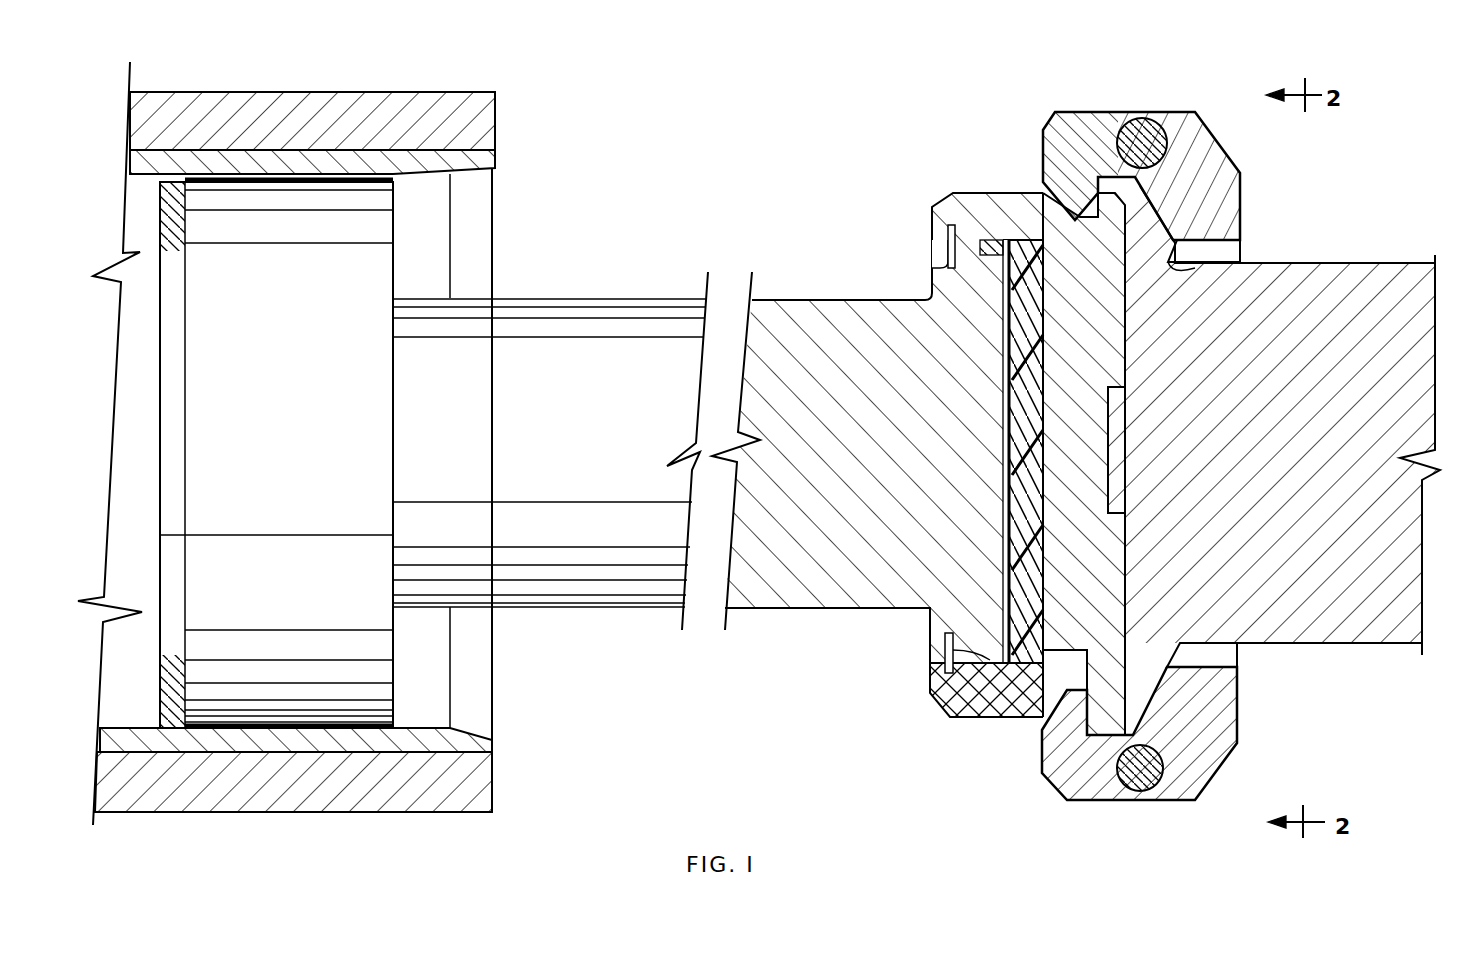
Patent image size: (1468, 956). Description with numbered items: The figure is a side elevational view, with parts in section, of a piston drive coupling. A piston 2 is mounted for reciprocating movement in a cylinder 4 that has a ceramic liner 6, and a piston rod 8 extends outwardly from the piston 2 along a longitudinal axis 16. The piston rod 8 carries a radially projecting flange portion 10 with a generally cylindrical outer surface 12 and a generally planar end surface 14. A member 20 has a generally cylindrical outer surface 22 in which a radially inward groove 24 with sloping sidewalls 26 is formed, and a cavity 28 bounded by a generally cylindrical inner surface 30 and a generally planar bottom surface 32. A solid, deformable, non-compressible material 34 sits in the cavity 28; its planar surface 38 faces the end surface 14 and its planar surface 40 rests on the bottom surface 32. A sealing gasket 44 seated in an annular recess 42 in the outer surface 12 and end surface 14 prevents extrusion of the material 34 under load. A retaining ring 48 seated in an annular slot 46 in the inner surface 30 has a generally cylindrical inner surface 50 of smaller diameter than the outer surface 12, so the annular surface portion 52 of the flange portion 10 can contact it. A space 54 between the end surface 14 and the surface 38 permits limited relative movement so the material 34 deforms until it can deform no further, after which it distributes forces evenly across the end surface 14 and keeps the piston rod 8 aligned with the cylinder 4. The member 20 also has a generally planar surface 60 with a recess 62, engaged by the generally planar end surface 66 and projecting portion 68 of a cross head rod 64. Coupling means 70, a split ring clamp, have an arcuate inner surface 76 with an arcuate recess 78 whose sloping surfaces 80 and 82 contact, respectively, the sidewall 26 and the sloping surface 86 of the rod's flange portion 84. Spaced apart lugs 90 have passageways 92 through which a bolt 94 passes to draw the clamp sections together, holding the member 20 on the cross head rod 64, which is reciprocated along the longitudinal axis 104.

The piston 2 is at (276, 443).
The cylinder 4 is at (297, 92).
The ceramic liner 6 is at (368, 160).
The piston rod 8 is at (552, 403).
The flange portion 10 is at (935, 600).
The generally cylindrical outer surface 12 is at (968, 240).
The generally planar end surface 14 is at (1003, 410).
The longitudinal axis 16 is at (468, 455).
The member 20 is at (1090, 280).
The generally cylindrical outer surface 22 is at (980, 195).
The groove 24 is at (1062, 205).
The sloping sidewalls 26 is at (1040, 735).
The cavity 28 is at (905, 672).
The generally cylindrical inner surface 30 is at (1010, 717).
The generally planar bottom surface 32 is at (1043, 468).
The solid, deformable, non-compressible material 34 is at (1034, 592).
The generally planar surface 38 is at (1012, 378).
The generally planar surface 40 is at (1003, 515).
The annular recess 42 is at (945, 655).
The sealing gasket 44 is at (948, 712).
The annular slot 46 is at (945, 240).
The retaining ring 48 is at (948, 245).
The generally cylindrical inner surface 50 is at (945, 262).
The annular surface portion 52 is at (940, 285).
The space 54 is at (1003, 350).
The generally planar surface 60 is at (1125, 310).
The recess 62 is at (1108, 437).
The cross head rod 64 is at (1294, 513).
The generally planar end surface 66 is at (1130, 342).
The projecting portion 68 is at (1118, 522).
The coupling means 70 is at (1350, 172).
The arcuate inner surface 76 is at (1205, 226).
The arcuate recess 78 is at (1149, 176).
The sloping surface 80 is at (1060, 160).
The sloping surface 82 is at (1195, 207).
The flange portion 84 is at (1235, 655).
The sloping surface 86 is at (1210, 268).
The lugs 90 is at (1222, 165).
The passageway 92 is at (1185, 135).
The bolt 94 is at (1140, 128).
The longitudinal axis 104 is at (1218, 441).